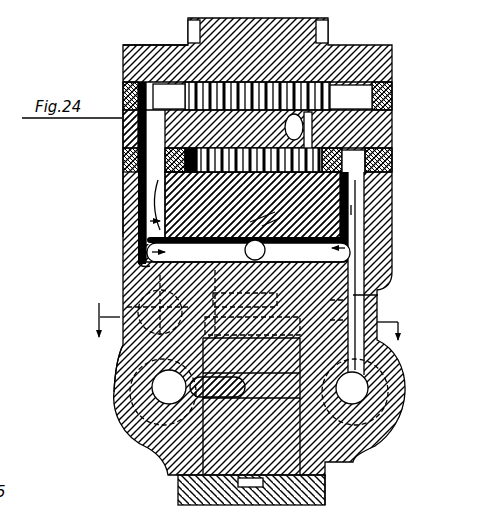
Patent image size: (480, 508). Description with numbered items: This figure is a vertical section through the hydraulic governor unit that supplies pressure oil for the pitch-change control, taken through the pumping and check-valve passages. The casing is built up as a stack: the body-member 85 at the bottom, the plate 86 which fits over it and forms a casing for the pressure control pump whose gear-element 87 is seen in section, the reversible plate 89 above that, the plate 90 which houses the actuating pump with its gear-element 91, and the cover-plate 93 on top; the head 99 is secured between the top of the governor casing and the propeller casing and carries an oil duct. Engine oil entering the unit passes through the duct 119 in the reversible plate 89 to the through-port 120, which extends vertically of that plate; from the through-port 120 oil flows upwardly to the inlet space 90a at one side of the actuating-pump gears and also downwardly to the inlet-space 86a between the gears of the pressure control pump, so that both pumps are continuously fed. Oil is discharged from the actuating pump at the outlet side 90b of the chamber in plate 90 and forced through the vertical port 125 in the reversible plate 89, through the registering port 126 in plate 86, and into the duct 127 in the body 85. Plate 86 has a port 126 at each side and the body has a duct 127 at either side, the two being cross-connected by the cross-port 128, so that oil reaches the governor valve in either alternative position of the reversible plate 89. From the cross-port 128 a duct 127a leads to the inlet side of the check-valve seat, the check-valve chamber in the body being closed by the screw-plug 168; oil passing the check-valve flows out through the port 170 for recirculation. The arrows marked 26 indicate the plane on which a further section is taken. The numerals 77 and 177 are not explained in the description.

The section line 26— 26 is at (236, 321).
The pin 77 is at (358, 200).
The body-member 85 is at (122, 176).
The plate 86 is at (115, 382).
The inlet-space 86a is at (285, 201).
The gear-element 87 is at (252, 205).
The reversible plate 89 is at (122, 126).
The plate 90 is at (122, 84).
The inlet space 90a is at (347, 108).
The outlet side 90b is at (153, 86).
The gear-element 91 is at (185, 97).
The cover-plate 93 is at (122, 45).
The head 99 is at (178, 489).
The duct 119 is at (310, 132).
The through-port 120 is at (314, 99).
The vertical port 125 is at (122, 138).
The port 126 is at (122, 163).
The duct 127 is at (140, 181).
The duct 127a is at (353, 295).
The cross-port 128 is at (138, 262).
The screw-plug 168 is at (352, 491).
The port 170 is at (118, 350).
The recess 177 is at (195, 493).